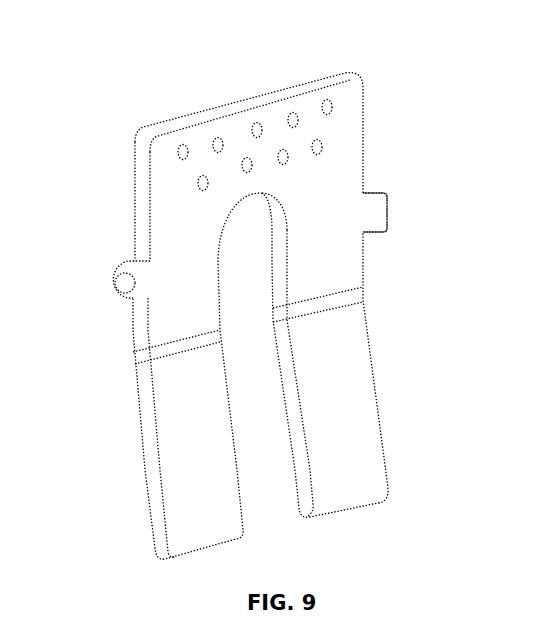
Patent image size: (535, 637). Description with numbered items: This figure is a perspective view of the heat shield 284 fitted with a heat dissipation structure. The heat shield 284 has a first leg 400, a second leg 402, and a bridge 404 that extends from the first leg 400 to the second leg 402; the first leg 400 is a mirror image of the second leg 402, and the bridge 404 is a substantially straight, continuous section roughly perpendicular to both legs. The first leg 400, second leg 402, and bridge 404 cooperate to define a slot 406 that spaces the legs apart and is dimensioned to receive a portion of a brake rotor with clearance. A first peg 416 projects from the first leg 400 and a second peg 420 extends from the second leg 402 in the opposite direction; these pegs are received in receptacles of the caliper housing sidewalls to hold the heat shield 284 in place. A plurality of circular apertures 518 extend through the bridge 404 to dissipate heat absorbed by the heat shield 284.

The heat shield 284 is at (362, 70).
The bridge 404 is at (252, 110).
The apertures 518 is at (203, 183).
The first peg 416 is at (373, 222).
The second peg 420 is at (127, 280).
The first leg 400 is at (352, 370).
The second leg 402 is at (167, 380).
The slot 406 is at (277, 522).